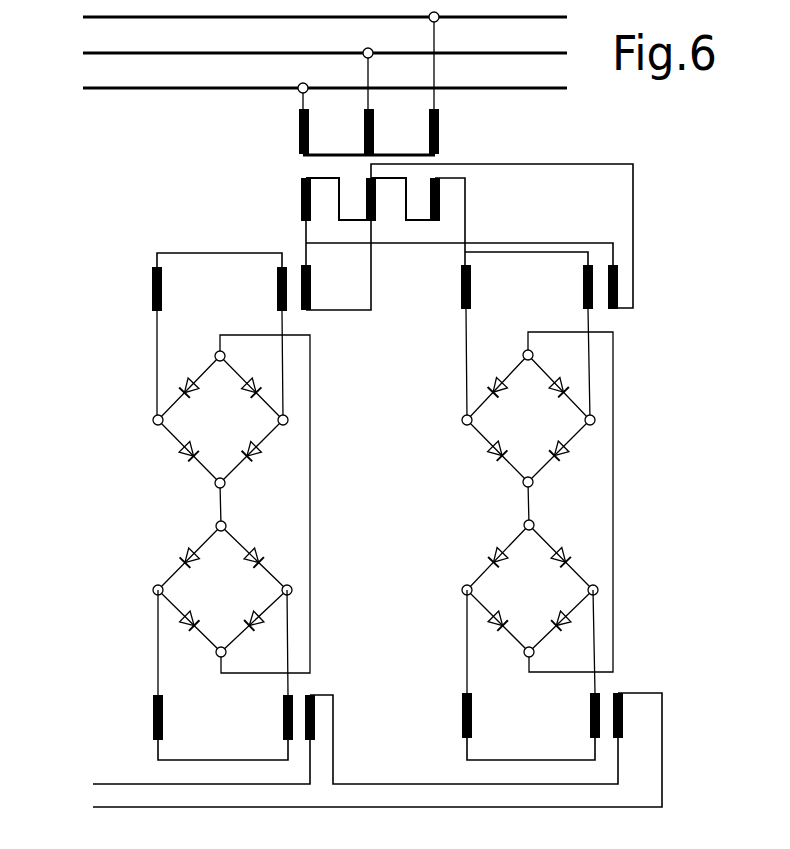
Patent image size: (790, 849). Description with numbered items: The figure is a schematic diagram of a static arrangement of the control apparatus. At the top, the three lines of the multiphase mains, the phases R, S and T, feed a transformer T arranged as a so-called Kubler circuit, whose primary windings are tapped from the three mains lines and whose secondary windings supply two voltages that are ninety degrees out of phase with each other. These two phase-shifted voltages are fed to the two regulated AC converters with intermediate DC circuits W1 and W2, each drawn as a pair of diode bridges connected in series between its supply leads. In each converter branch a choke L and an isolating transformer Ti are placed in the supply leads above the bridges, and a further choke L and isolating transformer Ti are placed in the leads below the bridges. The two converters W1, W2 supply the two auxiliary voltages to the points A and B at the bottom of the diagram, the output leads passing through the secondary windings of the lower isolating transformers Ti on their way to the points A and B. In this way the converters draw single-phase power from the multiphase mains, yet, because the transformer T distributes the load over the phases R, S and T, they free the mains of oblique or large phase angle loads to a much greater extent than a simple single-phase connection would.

The mains phase R is at (309, 21).
The mains phase S is at (309, 56).
The transformer T is at (342, 160).
The choke L is at (296, 502).
The isolating transformer Ti is at (436, 502).
The regulated AC converter with intermediate DC circuit W1 is at (231, 504).
The regulated AC converter with intermediate DC circuit W2 is at (537, 502).
The point A is at (339, 748).
The point B is at (361, 763).